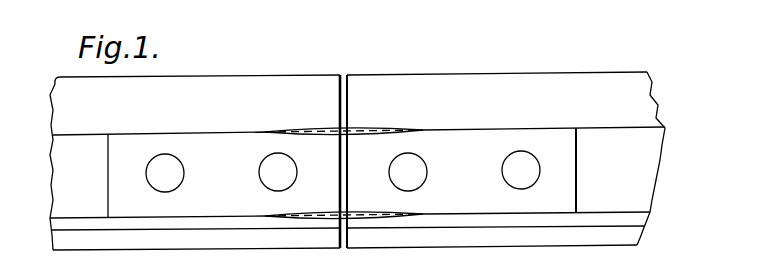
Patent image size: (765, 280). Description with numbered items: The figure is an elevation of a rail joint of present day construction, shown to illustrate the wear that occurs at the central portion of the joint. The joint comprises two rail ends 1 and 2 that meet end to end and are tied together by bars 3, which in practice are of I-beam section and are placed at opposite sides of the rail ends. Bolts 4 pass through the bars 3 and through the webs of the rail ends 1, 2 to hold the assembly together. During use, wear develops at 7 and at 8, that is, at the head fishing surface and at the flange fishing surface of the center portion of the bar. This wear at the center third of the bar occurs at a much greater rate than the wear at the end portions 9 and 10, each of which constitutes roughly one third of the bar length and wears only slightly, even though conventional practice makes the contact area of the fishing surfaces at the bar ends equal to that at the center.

The rail end 1 is at (247, 88).
The rail end 2 is at (430, 80).
The bar 3 is at (445, 138).
The bolt 4 is at (272, 185).
The wear at head fishing surface 7 is at (355, 138).
The wear at flange fishing surface 8 is at (338, 210).
The end portion of bar 9 is at (160, 138).
The end portion of bar 10 is at (513, 135).